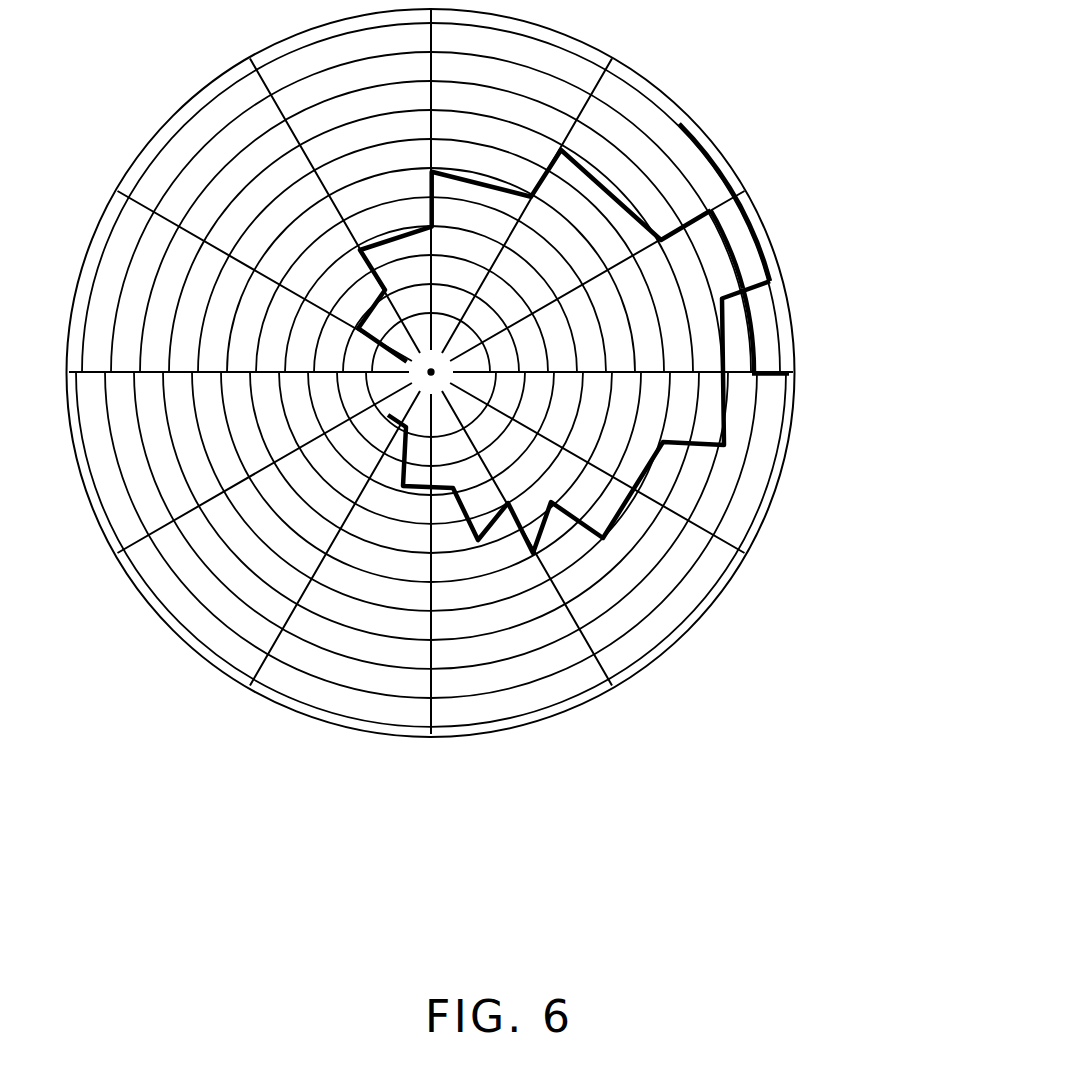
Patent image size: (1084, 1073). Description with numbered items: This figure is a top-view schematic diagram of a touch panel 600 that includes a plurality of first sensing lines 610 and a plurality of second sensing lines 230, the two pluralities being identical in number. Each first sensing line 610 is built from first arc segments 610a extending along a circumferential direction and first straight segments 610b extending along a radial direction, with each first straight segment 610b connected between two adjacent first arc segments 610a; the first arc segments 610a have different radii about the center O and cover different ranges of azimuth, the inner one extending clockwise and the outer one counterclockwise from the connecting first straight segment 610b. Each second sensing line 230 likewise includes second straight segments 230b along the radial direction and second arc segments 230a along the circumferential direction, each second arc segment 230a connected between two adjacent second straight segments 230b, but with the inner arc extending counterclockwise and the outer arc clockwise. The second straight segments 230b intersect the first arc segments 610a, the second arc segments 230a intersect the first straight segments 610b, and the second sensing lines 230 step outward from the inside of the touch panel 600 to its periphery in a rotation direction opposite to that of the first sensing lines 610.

The touch panel 600 is at (913, 786).
The center O is at (428, 373).
The first sensing lines 610 is at (886, 228).
The first arc segments 610a is at (763, 247).
The first straight segments 610b is at (763, 290).
The second sensing lines 230 is at (886, 348).
The second arc segments 230a is at (765, 335).
The second straight segments 230b is at (777, 390).